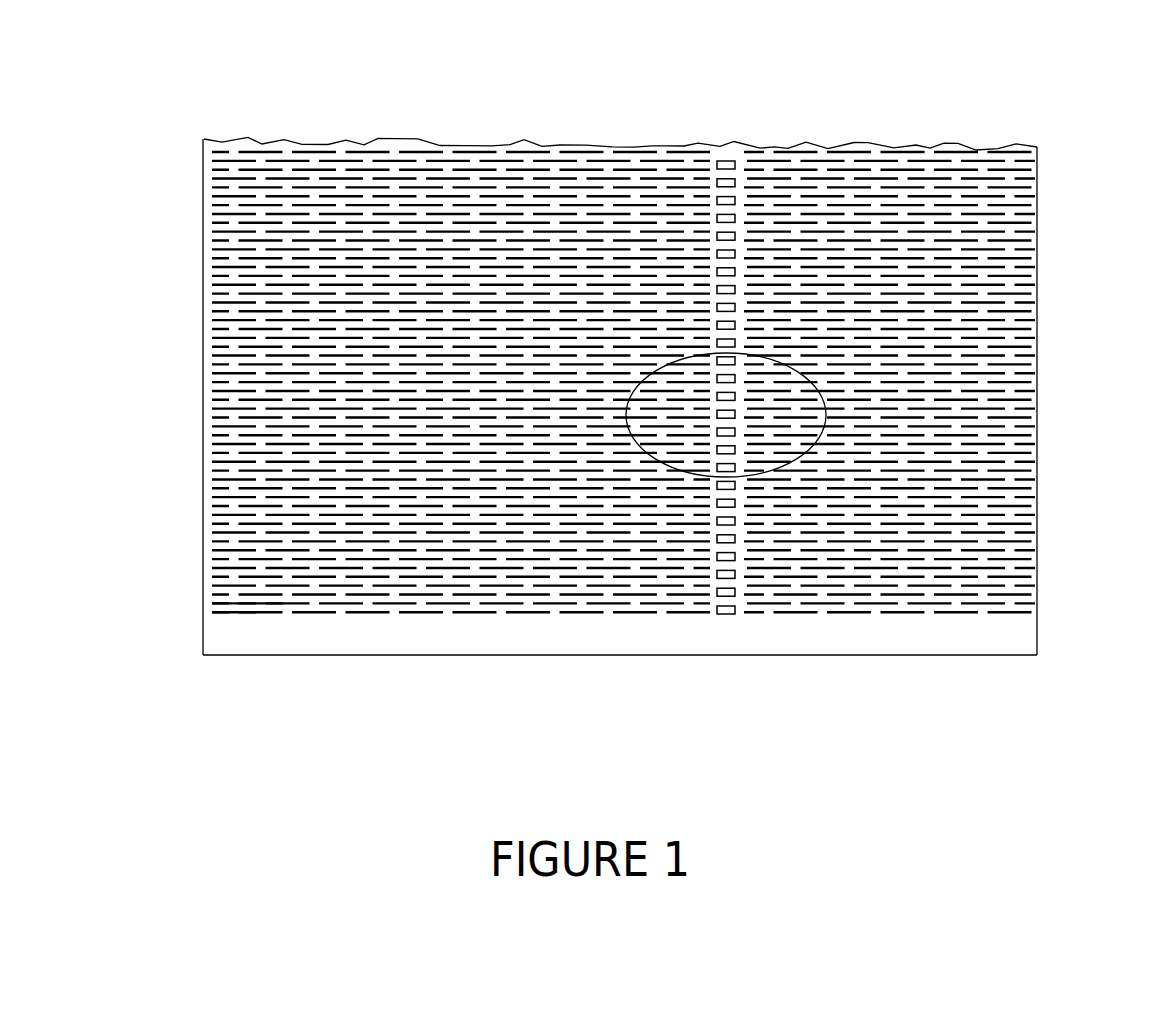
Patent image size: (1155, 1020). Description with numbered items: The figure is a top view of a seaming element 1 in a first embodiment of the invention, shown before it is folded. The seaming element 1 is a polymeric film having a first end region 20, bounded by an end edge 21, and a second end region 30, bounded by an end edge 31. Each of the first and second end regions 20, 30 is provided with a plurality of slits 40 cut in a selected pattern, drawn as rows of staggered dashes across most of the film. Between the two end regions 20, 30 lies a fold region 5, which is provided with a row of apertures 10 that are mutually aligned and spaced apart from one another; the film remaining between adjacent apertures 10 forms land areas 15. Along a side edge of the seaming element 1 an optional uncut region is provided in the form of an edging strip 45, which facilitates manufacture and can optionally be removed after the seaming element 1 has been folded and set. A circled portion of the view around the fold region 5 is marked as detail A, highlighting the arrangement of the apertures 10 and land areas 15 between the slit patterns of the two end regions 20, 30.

The seaming element 1 is at (193, 96).
The fold region 5 is at (743, 137).
The apertures 10 is at (737, 183).
The land areas 15 is at (737, 592).
The first end region 20 is at (877, 183).
The end edge 21 is at (1038, 310).
The second end region 30 is at (450, 192).
The end edge 31 is at (203, 448).
The slits 40 is at (283, 603).
The edging strip 45 is at (522, 638).
The detail area A is at (820, 441).